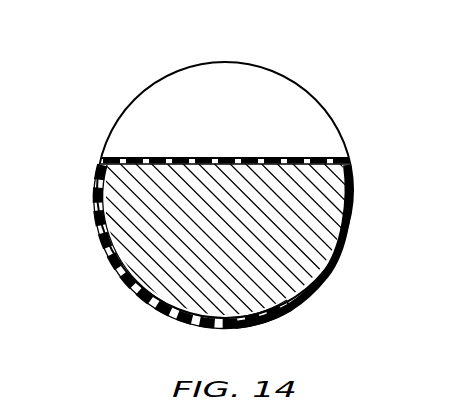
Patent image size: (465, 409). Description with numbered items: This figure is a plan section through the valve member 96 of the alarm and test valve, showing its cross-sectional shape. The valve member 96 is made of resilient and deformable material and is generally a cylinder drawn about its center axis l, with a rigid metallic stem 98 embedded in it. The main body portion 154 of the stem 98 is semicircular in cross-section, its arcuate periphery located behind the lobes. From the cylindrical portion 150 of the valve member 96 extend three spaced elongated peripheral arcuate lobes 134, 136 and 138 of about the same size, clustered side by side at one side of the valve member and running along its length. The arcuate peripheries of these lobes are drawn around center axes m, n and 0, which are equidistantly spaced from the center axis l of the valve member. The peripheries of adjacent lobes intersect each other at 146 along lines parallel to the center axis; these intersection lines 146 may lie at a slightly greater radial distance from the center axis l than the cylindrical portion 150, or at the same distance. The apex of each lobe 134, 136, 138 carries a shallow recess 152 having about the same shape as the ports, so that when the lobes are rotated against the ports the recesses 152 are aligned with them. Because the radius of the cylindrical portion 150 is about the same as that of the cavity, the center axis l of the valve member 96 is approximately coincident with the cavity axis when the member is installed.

The valve member 96 is at (273, 70).
The stem 98 is at (284, 244).
The lobe 138 is at (351, 196).
The lobe 136 is at (186, 317).
The intersection lines 146 is at (292, 302).
The cylindrical portion 150 is at (162, 78).
The lobe 134 is at (100, 197).
The shallow recess 152 is at (343, 258).
The main body portion 154 is at (243, 282).
The center axis 0 is at (342, 164).
The center axis m is at (192, 207).
The center axis l is at (258, 208).
The center axis n is at (223, 229).